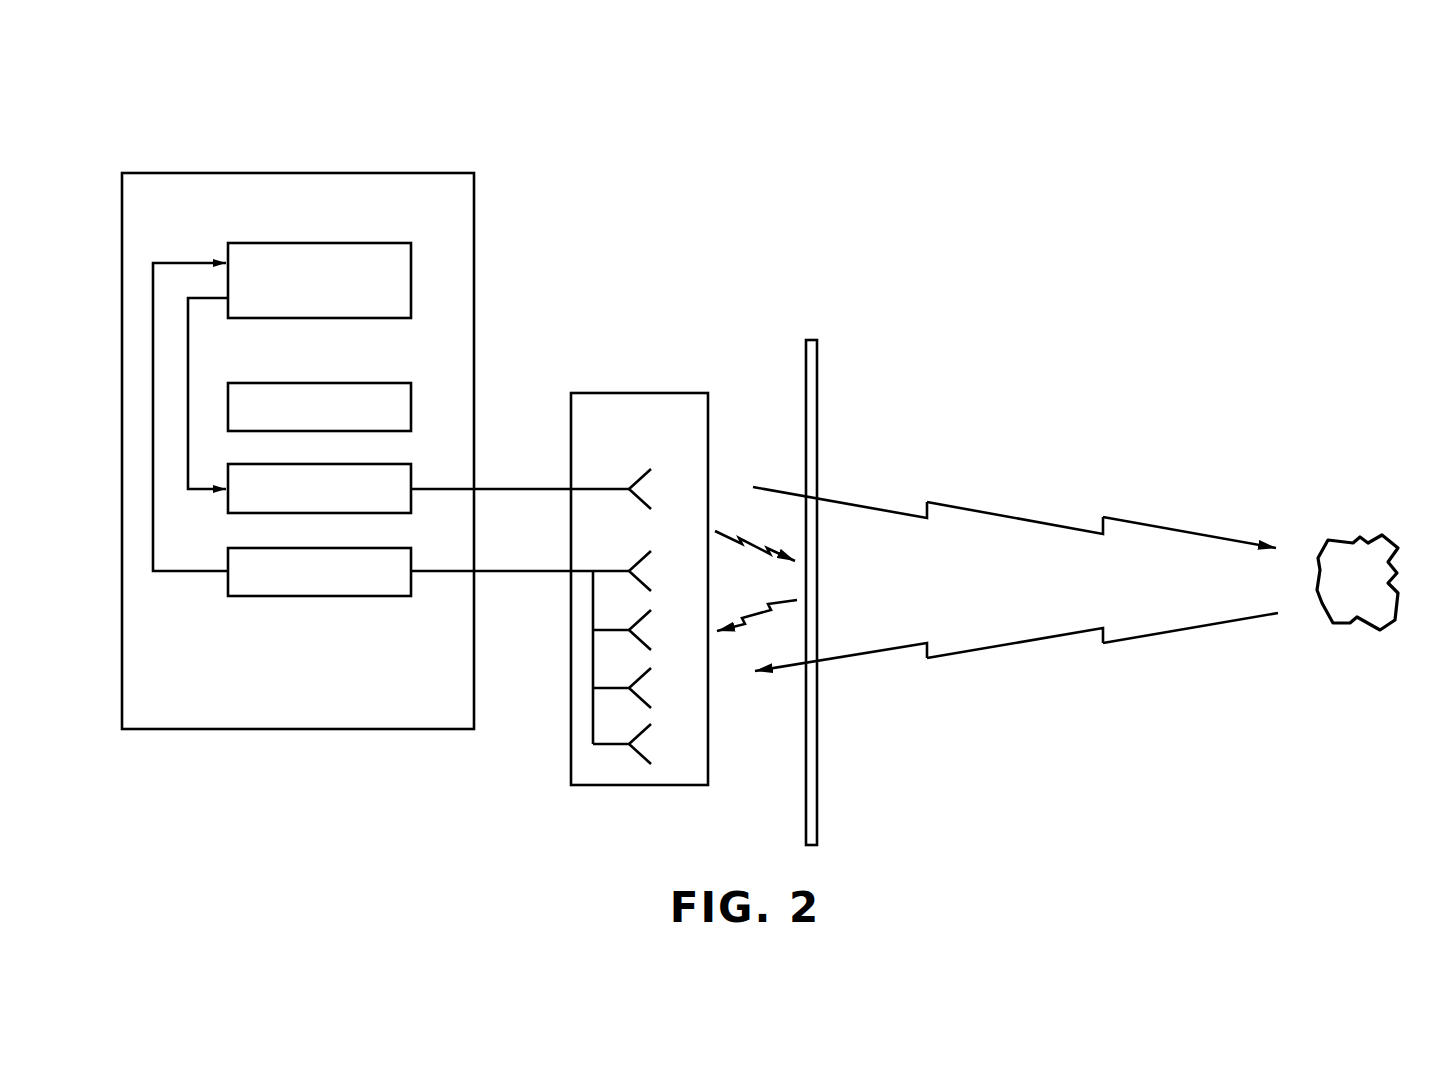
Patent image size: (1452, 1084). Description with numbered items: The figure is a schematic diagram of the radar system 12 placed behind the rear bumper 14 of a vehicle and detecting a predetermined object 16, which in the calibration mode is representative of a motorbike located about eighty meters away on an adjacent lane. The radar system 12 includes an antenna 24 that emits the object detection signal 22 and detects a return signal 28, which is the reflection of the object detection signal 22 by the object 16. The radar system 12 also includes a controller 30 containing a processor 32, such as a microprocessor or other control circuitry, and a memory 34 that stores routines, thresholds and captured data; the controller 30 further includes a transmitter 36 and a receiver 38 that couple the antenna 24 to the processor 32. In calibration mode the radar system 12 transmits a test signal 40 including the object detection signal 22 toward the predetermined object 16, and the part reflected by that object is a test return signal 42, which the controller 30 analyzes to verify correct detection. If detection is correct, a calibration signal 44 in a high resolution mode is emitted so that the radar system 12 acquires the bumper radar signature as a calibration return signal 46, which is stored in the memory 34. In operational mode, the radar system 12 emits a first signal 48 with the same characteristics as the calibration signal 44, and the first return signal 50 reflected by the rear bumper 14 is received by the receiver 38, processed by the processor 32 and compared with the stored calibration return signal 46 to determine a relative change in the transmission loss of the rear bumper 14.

The radar system 12 is at (577, 130).
The rear bumper 14 is at (829, 349).
The predetermined object 16 is at (1395, 625).
The object detection signal 22 is at (978, 511).
The antenna 24 is at (657, 386).
The return signal 28 is at (977, 652).
The controller 30 is at (197, 173).
The processor 32 is at (337, 291).
The memory 34 is at (337, 421).
The transmitter 36 is at (337, 503).
The receiver 38 is at (337, 587).
The test signal 40 is at (1070, 527).
The test return signal 42 is at (1068, 635).
The calibration signal 44 is at (758, 547).
The calibration return signal 46 is at (760, 617).
The first signal 48 is at (727, 533).
The first return signal 50 is at (735, 618).